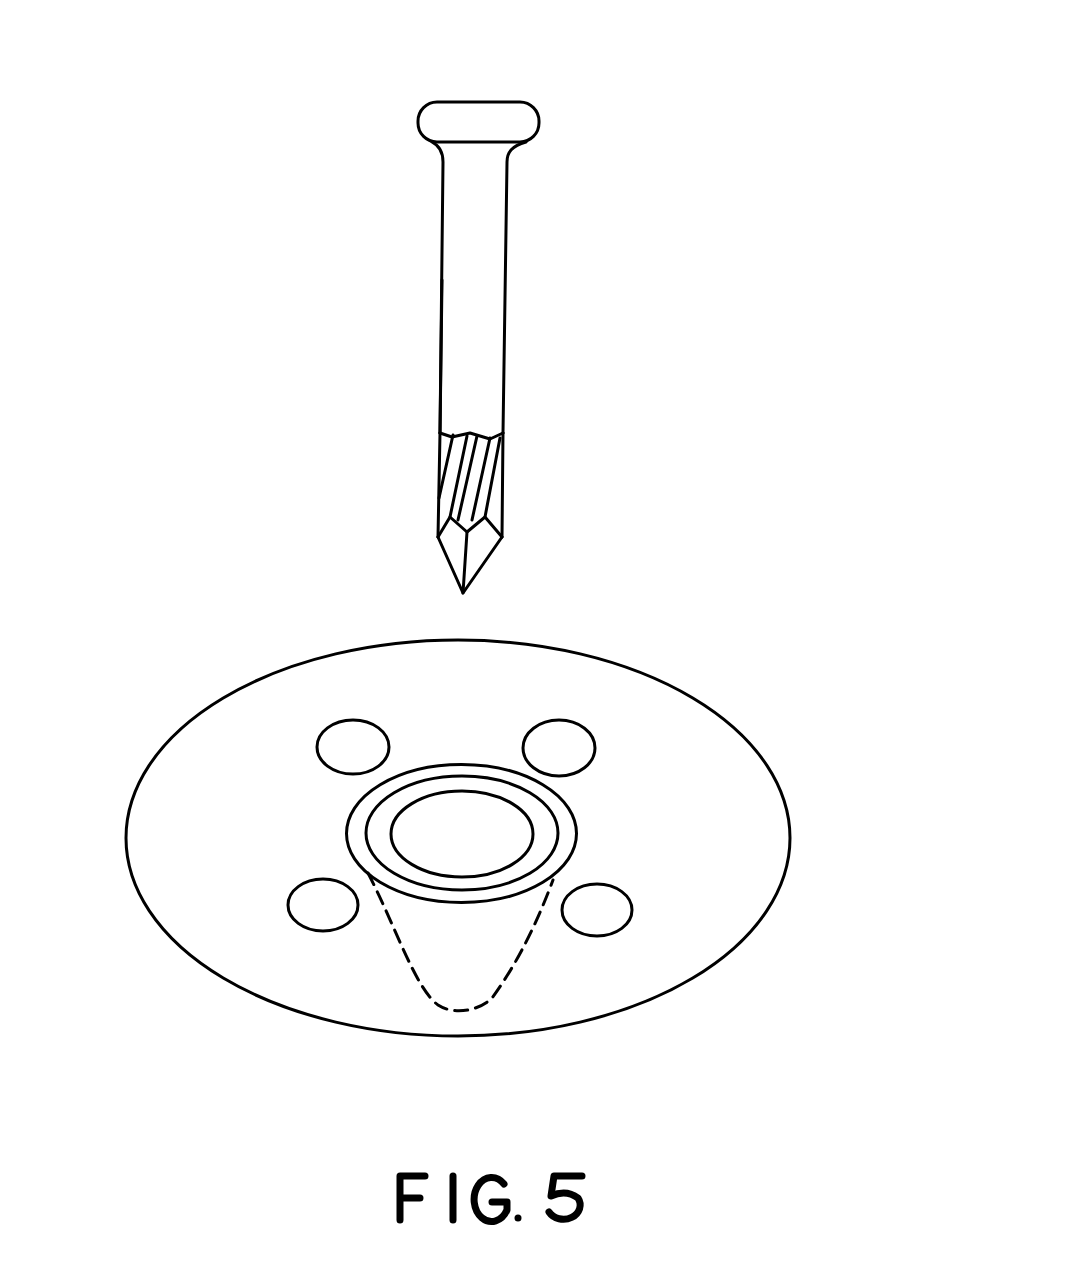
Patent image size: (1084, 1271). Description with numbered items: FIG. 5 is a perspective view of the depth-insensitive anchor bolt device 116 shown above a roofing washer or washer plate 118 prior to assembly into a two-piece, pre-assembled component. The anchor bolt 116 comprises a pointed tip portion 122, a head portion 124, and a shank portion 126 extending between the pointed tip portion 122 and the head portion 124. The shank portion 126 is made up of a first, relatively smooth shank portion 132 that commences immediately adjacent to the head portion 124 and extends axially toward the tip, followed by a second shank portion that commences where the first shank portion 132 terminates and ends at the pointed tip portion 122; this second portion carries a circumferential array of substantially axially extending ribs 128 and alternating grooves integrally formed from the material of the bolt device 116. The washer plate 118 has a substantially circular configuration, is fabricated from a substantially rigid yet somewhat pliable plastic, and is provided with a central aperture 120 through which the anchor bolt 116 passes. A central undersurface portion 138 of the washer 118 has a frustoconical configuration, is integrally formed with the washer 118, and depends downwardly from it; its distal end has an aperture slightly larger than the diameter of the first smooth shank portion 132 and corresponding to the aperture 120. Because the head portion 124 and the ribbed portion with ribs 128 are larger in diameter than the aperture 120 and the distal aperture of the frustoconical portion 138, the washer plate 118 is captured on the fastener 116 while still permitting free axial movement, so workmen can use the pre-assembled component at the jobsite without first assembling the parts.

The depth-insensitive anchor bolt device 116 is at (506, 305).
The roofing washer plate 118 is at (512, 854).
The central aperture 120 is at (760, 697).
The pointed tip portion 122 is at (548, 546).
The head portion 124 is at (557, 38).
The shank portion 126 is at (590, 190).
The ribs 128 is at (488, 471).
The first smooth shank portion 132 is at (455, 278).
The central undersurface portion 138 is at (473, 970).